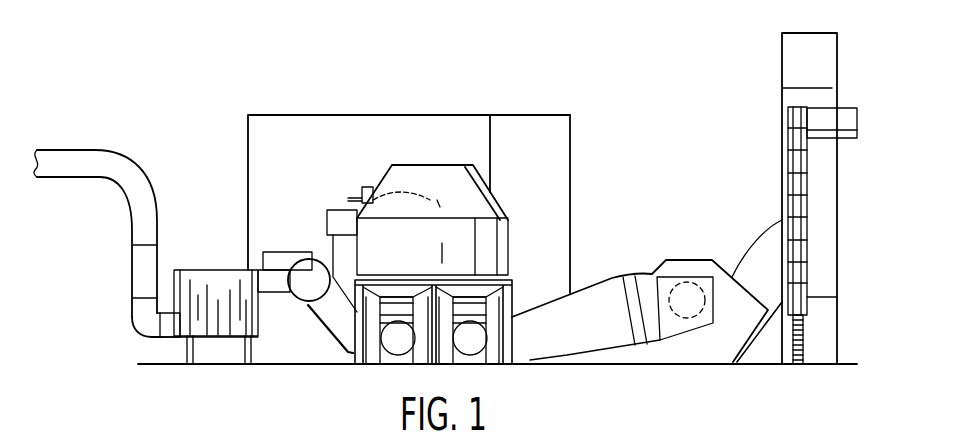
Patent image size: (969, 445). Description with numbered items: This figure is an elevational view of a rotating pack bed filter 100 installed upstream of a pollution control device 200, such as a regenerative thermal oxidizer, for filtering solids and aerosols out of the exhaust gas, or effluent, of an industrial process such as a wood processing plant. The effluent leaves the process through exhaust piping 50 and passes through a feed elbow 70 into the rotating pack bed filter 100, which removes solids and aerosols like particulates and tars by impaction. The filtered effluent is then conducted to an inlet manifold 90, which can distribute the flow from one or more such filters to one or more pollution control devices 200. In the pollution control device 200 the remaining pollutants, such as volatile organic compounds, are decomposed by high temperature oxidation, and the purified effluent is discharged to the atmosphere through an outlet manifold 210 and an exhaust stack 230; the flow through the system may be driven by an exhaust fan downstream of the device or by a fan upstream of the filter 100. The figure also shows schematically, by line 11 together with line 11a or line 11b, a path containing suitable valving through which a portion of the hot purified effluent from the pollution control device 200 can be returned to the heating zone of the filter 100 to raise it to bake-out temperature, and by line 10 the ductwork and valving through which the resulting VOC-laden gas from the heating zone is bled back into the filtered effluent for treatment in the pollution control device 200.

The line 10 is at (275, 248).
The line 11 is at (323, 114).
The line 11a is at (492, 140).
The line 11b is at (571, 141).
The exhaust piping 50 is at (125, 170).
The feed elbow 70 is at (148, 322).
The inlet manifold 90 is at (310, 264).
The rotating pack bed filter 100 is at (205, 277).
The pollution control device 200 is at (428, 248).
The outlet manifold 210 is at (674, 262).
The exhaust stack 230 is at (782, 146).